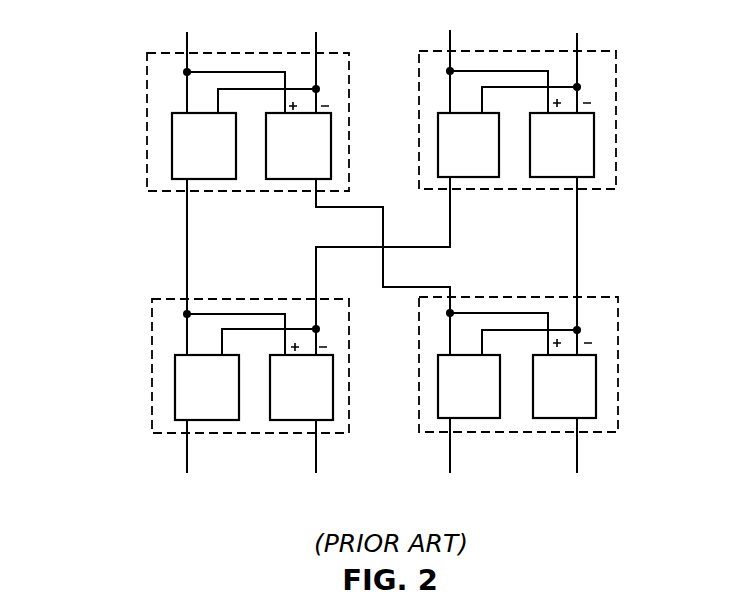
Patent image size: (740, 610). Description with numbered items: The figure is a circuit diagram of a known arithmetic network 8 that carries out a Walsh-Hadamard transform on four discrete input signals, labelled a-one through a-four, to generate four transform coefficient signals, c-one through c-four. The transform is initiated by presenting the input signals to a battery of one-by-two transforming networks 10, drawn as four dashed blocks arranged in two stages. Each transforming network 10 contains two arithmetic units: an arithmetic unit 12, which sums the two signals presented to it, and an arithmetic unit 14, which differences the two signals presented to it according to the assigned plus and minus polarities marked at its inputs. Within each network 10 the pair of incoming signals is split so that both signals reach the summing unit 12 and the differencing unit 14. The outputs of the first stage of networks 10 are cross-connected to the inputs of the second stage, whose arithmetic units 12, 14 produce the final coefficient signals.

The arithmetic network 8 is at (94, 229).
The 1 by 2 transforming network 10 is at (349, 99).
The arithmetic unit 12 is at (198, 113).
The arithmetic unit 14 is at (266, 122).